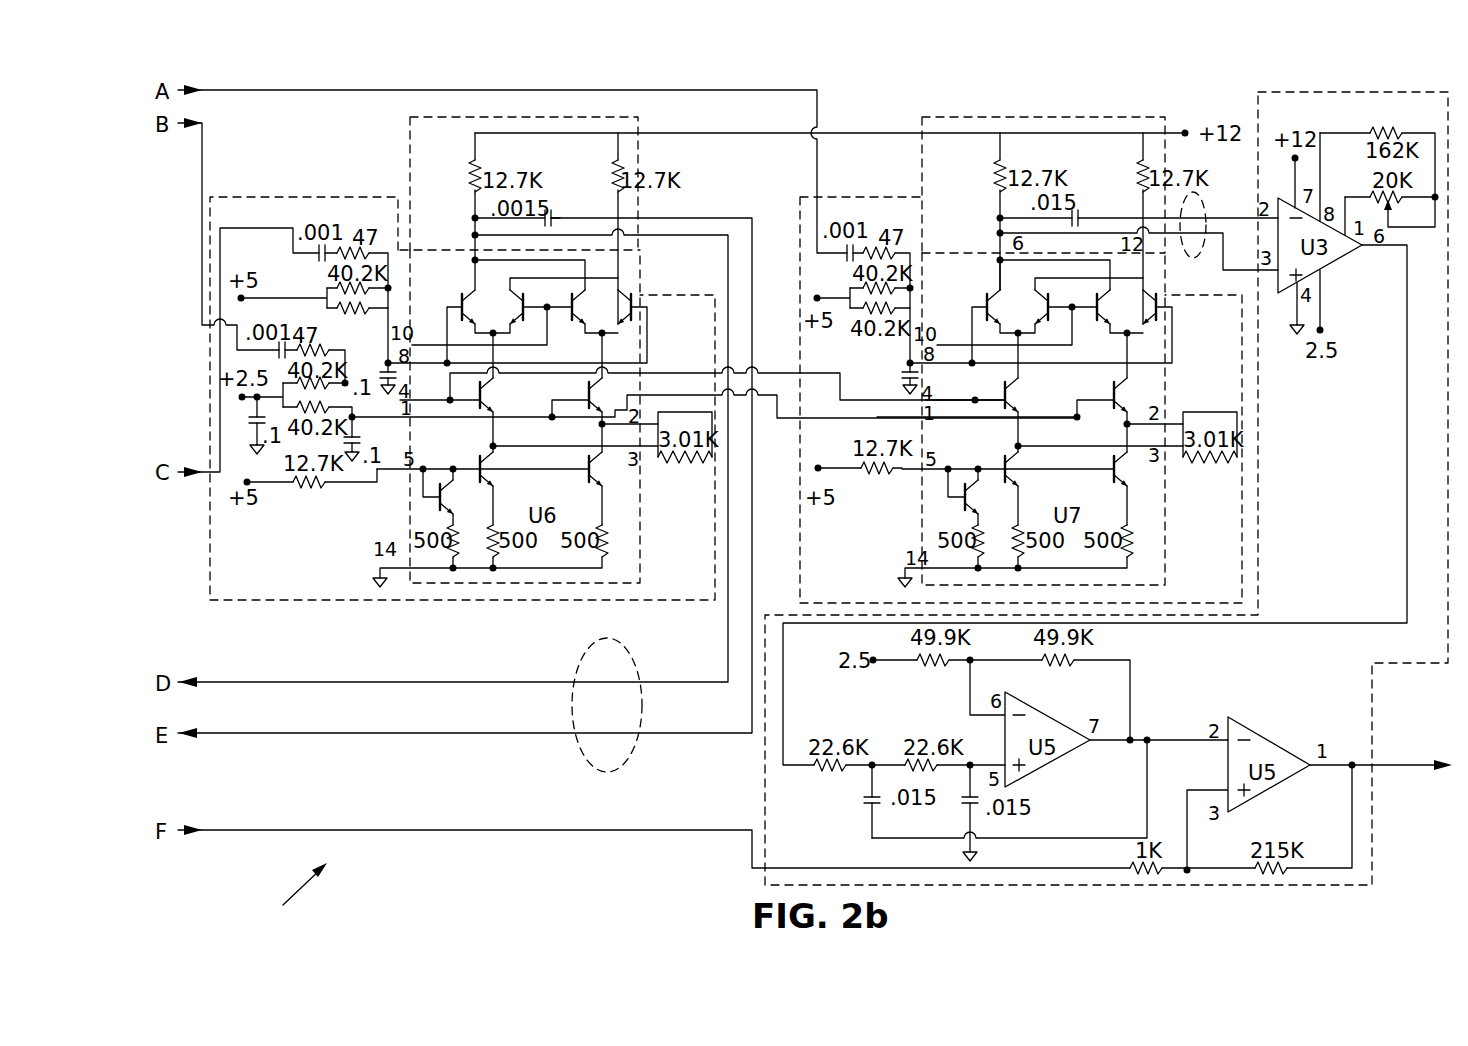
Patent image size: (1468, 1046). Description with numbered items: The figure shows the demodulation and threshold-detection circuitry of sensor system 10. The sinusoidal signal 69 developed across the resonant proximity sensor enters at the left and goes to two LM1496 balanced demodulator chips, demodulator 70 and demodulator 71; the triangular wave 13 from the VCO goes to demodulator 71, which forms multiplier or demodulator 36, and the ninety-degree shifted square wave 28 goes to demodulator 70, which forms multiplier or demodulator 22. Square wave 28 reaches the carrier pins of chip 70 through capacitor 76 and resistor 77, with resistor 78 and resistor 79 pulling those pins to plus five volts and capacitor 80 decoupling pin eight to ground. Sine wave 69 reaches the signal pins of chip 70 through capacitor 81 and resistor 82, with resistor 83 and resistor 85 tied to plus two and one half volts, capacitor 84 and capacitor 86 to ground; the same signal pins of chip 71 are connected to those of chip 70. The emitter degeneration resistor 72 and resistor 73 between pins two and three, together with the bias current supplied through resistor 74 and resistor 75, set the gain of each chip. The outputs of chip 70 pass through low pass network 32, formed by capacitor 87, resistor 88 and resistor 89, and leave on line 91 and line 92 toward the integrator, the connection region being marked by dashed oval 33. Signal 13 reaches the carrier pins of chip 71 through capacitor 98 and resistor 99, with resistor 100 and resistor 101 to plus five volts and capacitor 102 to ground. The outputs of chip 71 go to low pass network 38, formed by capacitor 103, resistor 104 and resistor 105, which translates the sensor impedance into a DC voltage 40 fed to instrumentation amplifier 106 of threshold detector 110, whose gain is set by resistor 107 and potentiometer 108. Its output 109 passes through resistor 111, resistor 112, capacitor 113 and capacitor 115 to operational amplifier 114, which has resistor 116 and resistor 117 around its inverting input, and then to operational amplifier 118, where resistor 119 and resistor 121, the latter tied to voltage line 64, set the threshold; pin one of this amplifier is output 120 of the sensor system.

The sensor system 10 is at (294, 895).
The triangular wave 13 is at (272, 92).
The multiplier or demodulator 22 is at (256, 603).
The square wave 28 is at (208, 476).
The low pass network 32 is at (408, 139).
The connection region 33 is at (628, 646).
The multiplier or demodulator 36 is at (800, 548).
The low pass network 38 is at (933, 116).
The DC voltage 40 is at (1193, 197).
The voltage line 64 is at (347, 829).
The sinusoidal signal 69 is at (203, 158).
The demodulator 70 is at (640, 540).
The demodulator 71 is at (1165, 556).
The emitter degeneration resistor 72 is at (688, 466).
The emitter degeneration resistor 73 is at (1213, 466).
The resistor 74 is at (311, 488).
The resistor 75 is at (883, 480).
The capacitor 76 is at (317, 257).
The resistor 77 is at (350, 245).
The resistor 78 is at (360, 288).
The resistor 79 is at (365, 310).
The capacitor 80 is at (396, 376).
The capacitor 81 is at (285, 340).
The resistor 82 is at (325, 352).
The resistor 83 is at (297, 383).
The capacitor 84 is at (355, 441).
The resistor 85 is at (330, 409).
The capacitor 86 is at (250, 418).
The capacitor 87 is at (552, 216).
The resistor 88 is at (473, 181).
The resistor 89 is at (616, 181).
The line 91 is at (457, 682).
The line 92 is at (468, 734).
The capacitor 98 is at (845, 250).
The resistor 99 is at (870, 246).
The resistor 100 is at (868, 285).
The resistor 101 is at (900, 310).
The capacitor 102 is at (906, 370).
The capacitor 103 is at (1080, 214).
The resistor 104 is at (996, 173).
The resistor 105 is at (1138, 173).
The instrumentation amplifier 106 is at (1334, 285).
The resistor 107 is at (1374, 124).
The potentiometer 108 is at (1377, 190).
The output 109 is at (1406, 439).
The threshold detector 110 is at (1395, 665).
The resistor 111 is at (820, 768).
The resistor 112 is at (900, 760).
The capacitor 113 is at (866, 810).
The operational amplifier 114 is at (1052, 768).
The capacitor 115 is at (964, 810).
The resistor 116 is at (1059, 668).
The resistor 117 is at (933, 668).
The operational amplifier 118 is at (1265, 740).
The resistor 119 is at (1267, 886).
The output 120 is at (1395, 764).
The resistor 121 is at (1144, 886).